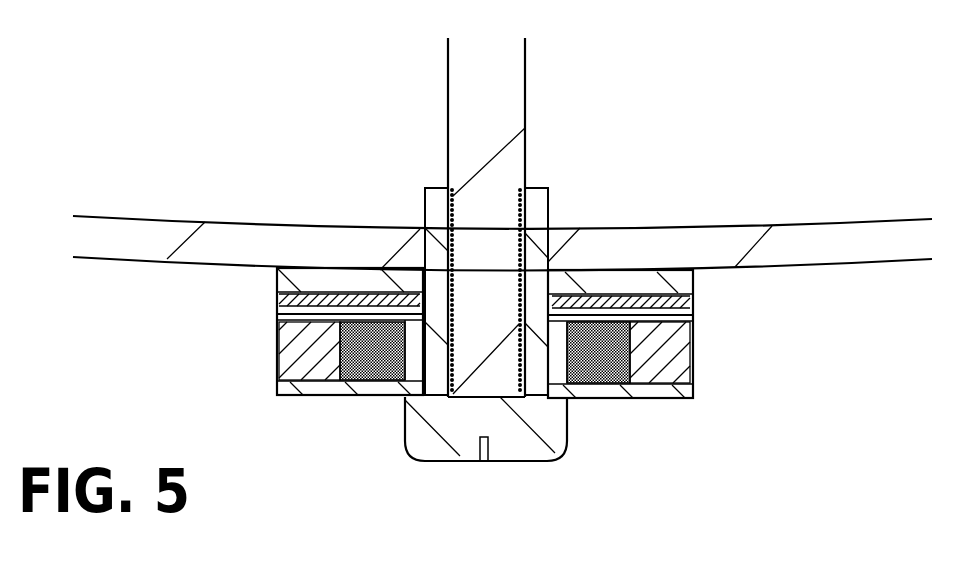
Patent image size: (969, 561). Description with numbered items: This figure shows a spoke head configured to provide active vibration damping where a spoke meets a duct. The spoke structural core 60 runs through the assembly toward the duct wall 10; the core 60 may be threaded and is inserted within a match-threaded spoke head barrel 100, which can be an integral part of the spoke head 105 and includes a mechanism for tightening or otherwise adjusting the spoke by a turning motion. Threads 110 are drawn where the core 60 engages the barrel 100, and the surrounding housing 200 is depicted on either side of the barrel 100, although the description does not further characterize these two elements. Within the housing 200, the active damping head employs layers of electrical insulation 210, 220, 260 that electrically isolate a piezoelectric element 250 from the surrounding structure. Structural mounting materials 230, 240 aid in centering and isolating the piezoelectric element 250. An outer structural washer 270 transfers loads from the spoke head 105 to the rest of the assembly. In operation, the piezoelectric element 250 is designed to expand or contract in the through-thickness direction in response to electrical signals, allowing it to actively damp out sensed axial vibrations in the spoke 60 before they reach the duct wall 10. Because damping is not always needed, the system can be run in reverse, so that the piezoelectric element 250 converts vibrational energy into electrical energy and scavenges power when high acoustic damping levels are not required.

The duct wall 10 is at (133, 233).
The spoke structural core 60 is at (485, 105).
The spoke head barrel 100 is at (538, 205).
The spoke head 105 is at (458, 423).
The threads 110 is at (527, 250).
The housing 200 is at (690, 283).
The layer of electrical insulation 210 is at (277, 298).
The layer of electrical insulation 220 is at (690, 313).
The structural mounting material 230 is at (285, 312).
The structural mounting material 240 is at (695, 357).
The piezoelectric element 250 is at (340, 348).
The layer of electrical insulation 260 is at (557, 373).
The outer structural washer 270 is at (279, 392).